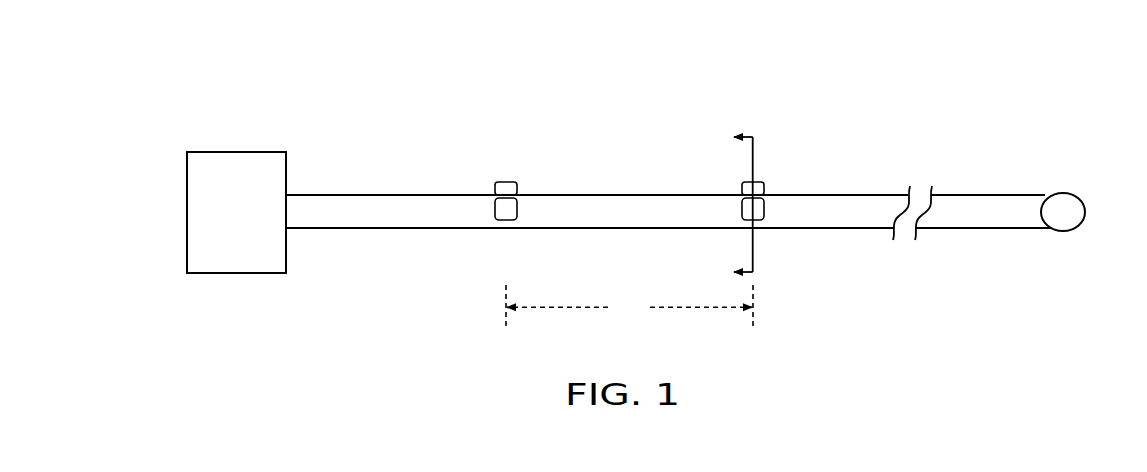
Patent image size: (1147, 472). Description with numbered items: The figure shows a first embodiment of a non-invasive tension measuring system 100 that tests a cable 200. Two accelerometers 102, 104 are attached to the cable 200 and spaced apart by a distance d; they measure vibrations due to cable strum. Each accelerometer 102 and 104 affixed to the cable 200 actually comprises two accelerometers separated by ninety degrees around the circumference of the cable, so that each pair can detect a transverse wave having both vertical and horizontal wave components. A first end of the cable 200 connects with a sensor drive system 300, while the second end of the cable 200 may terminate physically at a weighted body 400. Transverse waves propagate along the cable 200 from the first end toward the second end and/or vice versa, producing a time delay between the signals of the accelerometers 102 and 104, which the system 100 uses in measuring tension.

The non-invasive tension measuring system 100 is at (970, 88).
The accelerometer 102 is at (520, 172).
The accelerometer 104 is at (765, 173).
The cable 200 is at (417, 195).
The sensor drive system 300 is at (272, 152).
The weighted body 400 is at (1063, 193).